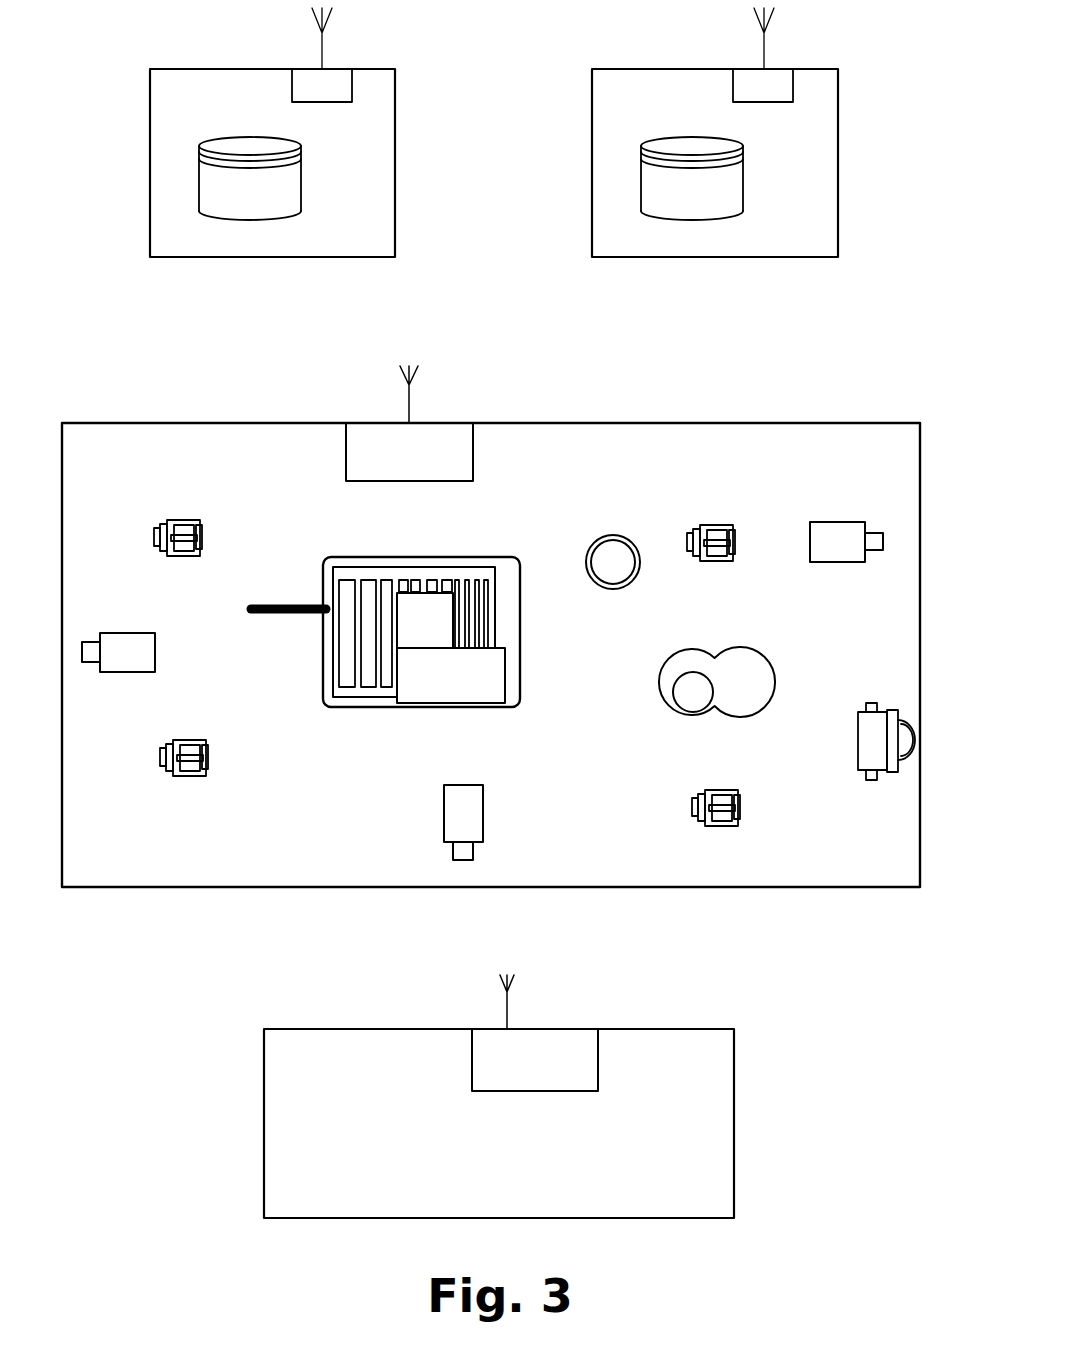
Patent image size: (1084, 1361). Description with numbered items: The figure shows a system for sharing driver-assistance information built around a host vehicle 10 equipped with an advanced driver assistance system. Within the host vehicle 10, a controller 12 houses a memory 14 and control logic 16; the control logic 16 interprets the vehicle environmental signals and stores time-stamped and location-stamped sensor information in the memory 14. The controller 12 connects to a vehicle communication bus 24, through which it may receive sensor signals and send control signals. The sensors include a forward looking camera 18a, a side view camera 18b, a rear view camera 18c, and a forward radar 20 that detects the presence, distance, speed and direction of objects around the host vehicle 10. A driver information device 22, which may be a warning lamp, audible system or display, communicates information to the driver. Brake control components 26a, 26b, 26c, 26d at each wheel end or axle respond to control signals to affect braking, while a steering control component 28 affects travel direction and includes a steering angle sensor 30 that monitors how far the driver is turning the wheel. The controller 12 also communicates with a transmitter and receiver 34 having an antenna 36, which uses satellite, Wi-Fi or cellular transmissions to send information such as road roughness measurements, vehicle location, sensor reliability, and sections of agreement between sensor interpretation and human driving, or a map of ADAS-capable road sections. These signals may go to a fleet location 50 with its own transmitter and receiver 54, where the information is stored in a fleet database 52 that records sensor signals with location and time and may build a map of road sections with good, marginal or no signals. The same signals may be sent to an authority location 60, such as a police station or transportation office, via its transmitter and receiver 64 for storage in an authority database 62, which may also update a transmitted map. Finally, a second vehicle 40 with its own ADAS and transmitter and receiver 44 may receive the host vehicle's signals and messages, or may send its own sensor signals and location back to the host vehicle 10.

The host vehicle 10 is at (830, 387).
The controller 12 is at (463, 556).
The memory 14 is at (410, 636).
The control logic 16 is at (437, 689).
The camera 18a is at (836, 521).
The camera 18b is at (485, 812).
The camera 18c is at (157, 652).
The radar 20 is at (884, 710).
The driver information device 22 is at (620, 538).
The vehicle communication bus 24 is at (288, 605).
The brake control component 26a is at (715, 524).
The brake control component 26b is at (742, 803).
The brake control component 26c is at (204, 533).
The brake control component 26d is at (210, 755).
The steering control component 28 is at (750, 648).
The steering angle sensor 30 is at (682, 695).
The transmitter and receiver 34 is at (474, 432).
The antenna 36 is at (410, 402).
The second vehicle 40 is at (770, 1045).
The transmitter and receiver 44 is at (552, 1029).
The fleet location 50 is at (110, 171).
The fleet database 52 is at (234, 205).
The transmitter and receiver 54 is at (334, 80).
The authority location 60 is at (900, 171).
The authority database 62 is at (676, 205).
The transmitter and receiver 64 is at (777, 80).